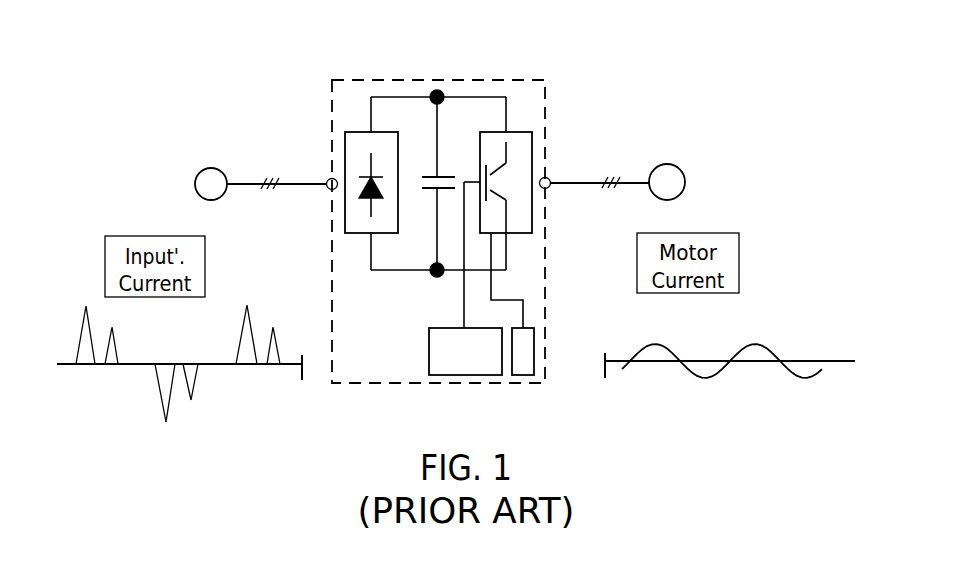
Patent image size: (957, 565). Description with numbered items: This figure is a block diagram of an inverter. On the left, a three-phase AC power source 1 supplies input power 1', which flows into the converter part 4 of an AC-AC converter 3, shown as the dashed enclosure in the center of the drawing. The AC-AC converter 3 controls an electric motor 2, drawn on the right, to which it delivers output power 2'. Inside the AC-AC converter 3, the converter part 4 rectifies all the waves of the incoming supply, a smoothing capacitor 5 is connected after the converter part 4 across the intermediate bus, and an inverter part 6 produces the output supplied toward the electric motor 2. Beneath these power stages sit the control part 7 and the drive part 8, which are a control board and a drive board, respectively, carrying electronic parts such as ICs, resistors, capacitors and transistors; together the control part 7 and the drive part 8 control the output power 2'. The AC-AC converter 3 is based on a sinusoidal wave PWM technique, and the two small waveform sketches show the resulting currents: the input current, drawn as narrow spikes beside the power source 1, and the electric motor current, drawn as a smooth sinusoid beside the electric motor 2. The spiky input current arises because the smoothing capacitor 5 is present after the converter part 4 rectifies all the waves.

The three-phase AC power source 1 is at (211, 152).
The input power 1' is at (283, 155).
The electric motor 2 is at (667, 151).
The output power 2' is at (595, 154).
The AC-AC converter 3 is at (488, 80).
The converter part 4 is at (362, 235).
The smoothing capacitor 5 is at (430, 192).
The inverter part 6 is at (533, 212).
The control part 7 is at (429, 354).
The drive part 8 is at (534, 354).